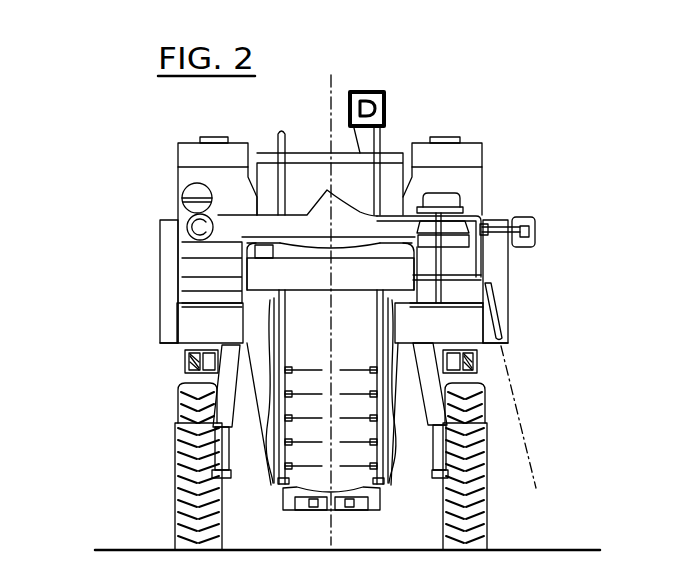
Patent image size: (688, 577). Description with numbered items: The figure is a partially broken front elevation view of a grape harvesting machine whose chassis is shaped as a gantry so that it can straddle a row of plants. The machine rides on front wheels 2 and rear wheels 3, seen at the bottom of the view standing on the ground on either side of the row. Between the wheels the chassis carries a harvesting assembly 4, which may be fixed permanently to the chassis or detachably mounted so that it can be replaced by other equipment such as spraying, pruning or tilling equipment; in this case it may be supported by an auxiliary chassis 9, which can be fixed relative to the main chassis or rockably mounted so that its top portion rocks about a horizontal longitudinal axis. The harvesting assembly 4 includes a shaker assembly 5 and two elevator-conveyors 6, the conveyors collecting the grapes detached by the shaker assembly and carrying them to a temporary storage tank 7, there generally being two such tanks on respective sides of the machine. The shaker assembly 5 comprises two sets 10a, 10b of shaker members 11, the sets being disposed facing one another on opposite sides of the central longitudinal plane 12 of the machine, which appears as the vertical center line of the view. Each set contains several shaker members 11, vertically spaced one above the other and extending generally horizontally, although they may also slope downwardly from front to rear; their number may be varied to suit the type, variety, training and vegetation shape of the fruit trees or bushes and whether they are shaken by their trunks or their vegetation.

The front wheels 2 is at (180, 507).
The rear wheels 3 is at (188, 400).
The harvesting assembly 4 is at (265, 481).
The shaker assembly 5 is at (322, 331).
The elevator-conveyors 6 is at (312, 508).
The temporary storage tank 7 is at (152, 280).
The auxiliary chassis 9 is at (266, 313).
The first set of shaker members 10a is at (304, 475).
The second set of shaker members 10b is at (352, 476).
The shaker members 11 is at (318, 394).
The central longitudinal plane 12 is at (333, 80).